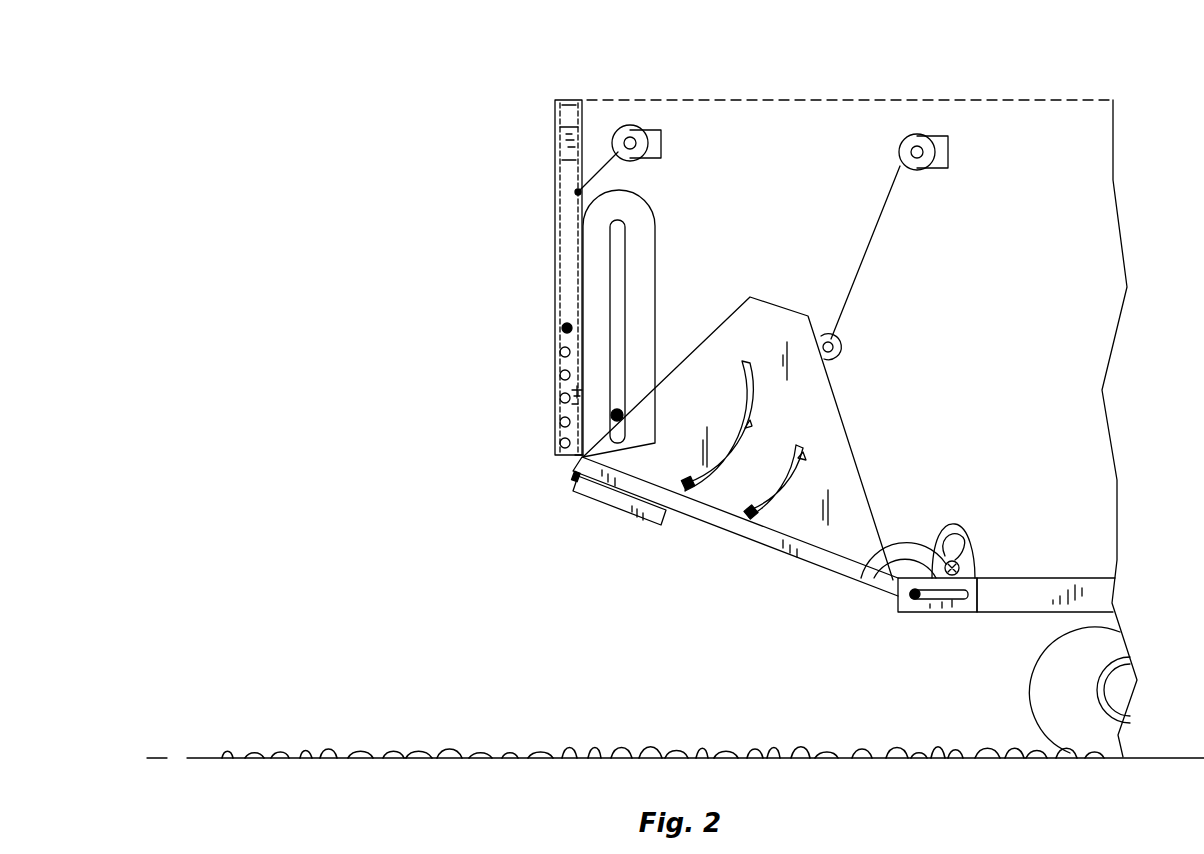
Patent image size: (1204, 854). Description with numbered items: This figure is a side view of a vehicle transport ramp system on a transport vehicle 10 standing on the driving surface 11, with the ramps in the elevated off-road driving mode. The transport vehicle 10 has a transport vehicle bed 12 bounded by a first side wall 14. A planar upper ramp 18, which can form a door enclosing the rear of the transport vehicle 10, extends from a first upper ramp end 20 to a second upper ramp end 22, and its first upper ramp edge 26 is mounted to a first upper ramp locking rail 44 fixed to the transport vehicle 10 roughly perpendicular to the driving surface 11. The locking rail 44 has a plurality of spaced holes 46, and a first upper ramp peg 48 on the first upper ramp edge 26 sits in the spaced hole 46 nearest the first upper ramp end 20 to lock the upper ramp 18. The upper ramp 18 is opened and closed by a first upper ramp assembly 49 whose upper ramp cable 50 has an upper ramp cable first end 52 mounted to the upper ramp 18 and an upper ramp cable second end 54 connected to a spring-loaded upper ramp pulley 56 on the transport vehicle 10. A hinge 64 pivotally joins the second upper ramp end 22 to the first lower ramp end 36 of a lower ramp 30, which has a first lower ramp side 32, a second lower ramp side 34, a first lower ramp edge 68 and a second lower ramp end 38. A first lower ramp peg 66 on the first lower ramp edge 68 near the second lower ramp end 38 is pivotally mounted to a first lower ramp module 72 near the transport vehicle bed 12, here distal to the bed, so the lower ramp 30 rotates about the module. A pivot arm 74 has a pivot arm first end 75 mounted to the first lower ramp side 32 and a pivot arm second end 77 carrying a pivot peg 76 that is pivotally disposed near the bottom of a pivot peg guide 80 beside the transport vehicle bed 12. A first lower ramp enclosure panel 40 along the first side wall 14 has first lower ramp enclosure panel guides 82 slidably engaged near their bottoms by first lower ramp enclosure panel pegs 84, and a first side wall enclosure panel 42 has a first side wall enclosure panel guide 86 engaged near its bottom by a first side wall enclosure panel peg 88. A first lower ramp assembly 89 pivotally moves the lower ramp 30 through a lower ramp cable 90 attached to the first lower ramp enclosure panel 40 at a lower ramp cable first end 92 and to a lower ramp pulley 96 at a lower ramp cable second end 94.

The transport vehicle 10 is at (1076, 72).
The driving surface 11 is at (880, 753).
The transport vehicle bed 12 is at (1073, 577).
The first side wall 14 is at (1012, 360).
The upper ramp 18 is at (482, 102).
The first upper ramp end 20 is at (567, 107).
The second upper ramp end 22 is at (575, 455).
The first upper ramp edge 26 is at (567, 233).
The lower ramp 30 is at (552, 529).
The first lower ramp side 32 is at (803, 557).
The second lower ramp side 34 is at (820, 570).
The first lower ramp end 36 is at (563, 475).
The second lower ramp end 38 is at (890, 602).
The first lower ramp enclosure panel 40 is at (830, 404).
The first side wall enclosure panel 42 is at (642, 244).
The first upper ramp locking rail 44 is at (557, 136).
The spaced holes 46 is at (560, 442).
The first upper ramp peg 48 is at (565, 326).
The first upper ramp assembly 49 is at (690, 58).
The upper ramp cable 50 is at (598, 162).
The upper ramp cable first end 52 is at (577, 190).
The upper ramp cable second end 54 is at (612, 144).
The upper ramp pulley 56 is at (660, 129).
The hinge 64 is at (572, 470).
The first lower ramp peg 66 is at (917, 600).
The first lower ramp edge 68 is at (685, 508).
The first lower ramp module 72 is at (965, 600).
The pivot arm 74 is at (903, 549).
The pivot arm first end 75 is at (878, 578).
The pivot peg 76 is at (959, 566).
The pivot arm second end 77 is at (918, 578).
The pivot peg guide 80 is at (958, 550).
The first lower ramp enclosure panel guide 82 is at (804, 453).
The first lower ramp enclosure panel peg 84 is at (750, 514).
The first side wall enclosure panel guide 86 is at (618, 279).
The first side wall enclosure panel peg 88 is at (617, 414).
The first lower ramp assembly 89 is at (978, 58).
The lower ramp cable 90 is at (886, 168).
The lower ramp cable first end 92 is at (842, 346).
The lower ramp cable second end 94 is at (899, 153).
The lower ramp pulley 96 is at (946, 136).